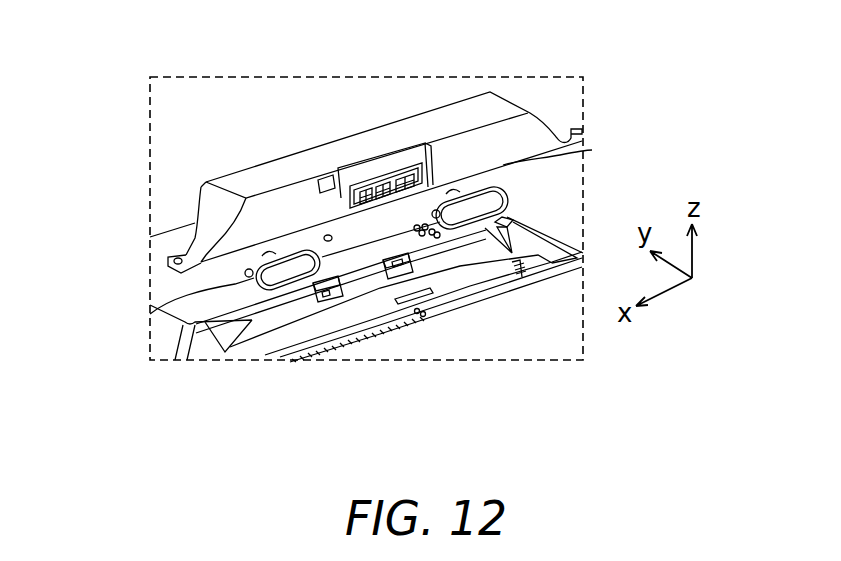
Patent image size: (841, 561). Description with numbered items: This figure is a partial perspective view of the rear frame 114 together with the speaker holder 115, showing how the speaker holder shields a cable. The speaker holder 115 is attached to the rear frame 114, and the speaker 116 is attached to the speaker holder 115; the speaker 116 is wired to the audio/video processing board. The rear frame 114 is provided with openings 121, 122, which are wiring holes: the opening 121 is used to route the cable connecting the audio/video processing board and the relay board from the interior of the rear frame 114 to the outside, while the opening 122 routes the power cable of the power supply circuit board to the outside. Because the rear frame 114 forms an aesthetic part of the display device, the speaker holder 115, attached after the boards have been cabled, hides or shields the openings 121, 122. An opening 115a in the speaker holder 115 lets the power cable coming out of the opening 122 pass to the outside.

The rear frame 114 is at (276, 364).
The speaker holder 115 is at (400, 118).
The opening 115a is at (322, 177).
The speaker 116 is at (507, 195).
The opening 121 is at (417, 273).
The opening 122 is at (330, 303).